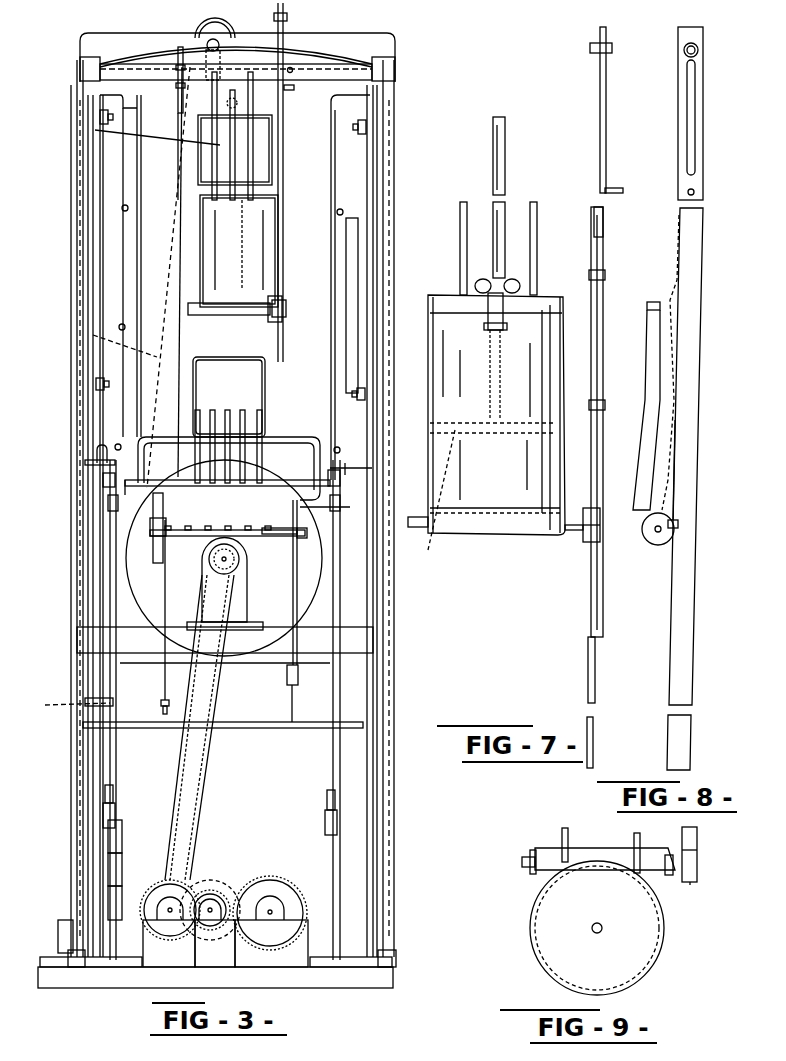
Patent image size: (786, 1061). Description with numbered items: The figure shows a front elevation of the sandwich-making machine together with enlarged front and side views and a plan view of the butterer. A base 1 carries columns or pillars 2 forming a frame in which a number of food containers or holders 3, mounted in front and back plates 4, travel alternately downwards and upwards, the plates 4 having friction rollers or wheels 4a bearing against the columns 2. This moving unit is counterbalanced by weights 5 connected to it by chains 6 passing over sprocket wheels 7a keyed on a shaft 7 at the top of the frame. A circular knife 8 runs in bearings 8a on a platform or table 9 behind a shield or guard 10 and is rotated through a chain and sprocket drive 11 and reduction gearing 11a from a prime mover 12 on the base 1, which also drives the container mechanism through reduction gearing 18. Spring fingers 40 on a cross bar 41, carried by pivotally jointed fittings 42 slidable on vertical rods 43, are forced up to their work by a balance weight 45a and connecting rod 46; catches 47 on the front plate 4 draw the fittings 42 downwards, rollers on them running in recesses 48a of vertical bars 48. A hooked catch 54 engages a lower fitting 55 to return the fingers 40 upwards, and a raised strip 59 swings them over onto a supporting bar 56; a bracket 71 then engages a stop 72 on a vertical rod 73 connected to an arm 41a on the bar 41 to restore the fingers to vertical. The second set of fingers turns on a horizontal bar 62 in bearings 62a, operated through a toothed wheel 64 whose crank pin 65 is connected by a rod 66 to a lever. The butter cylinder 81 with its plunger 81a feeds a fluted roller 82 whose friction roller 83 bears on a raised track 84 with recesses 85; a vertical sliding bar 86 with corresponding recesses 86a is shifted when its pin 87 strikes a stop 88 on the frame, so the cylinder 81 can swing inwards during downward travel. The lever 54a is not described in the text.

In FIG. 3, the base 1 is at (375, 980).
In FIG. 3, the columns or pillars 2 is at (80, 622).
In FIG. 3, the food containers or holders 3 is at (210, 145).
In FIG. 3, the front and back plates 4 is at (157, 236).
In FIG. 3, the friction rollers or wheels 4a is at (100, 115).
In FIG. 3, the weights 5 is at (118, 858).
In FIG. 3, the chains 6 is at (109, 335).
In FIG. 3, the shaft 7 is at (208, 48).
In FIG. 3, the sprocket wheels 7a is at (228, 30).
In FIG. 3, the circular knife 8 is at (300, 492).
In FIG. 3, the bearings 8a is at (298, 580).
In FIG. 3, the platform or table 9 is at (373, 634).
In FIG. 3, the shield or guard 10 is at (350, 507).
In FIG. 3, the chain and sprocket drive 11 is at (202, 813).
In FIG. 3, the reduction gearing 11a is at (293, 903).
In FIG. 3, the prime mover 12 is at (227, 892).
In FIG. 3, the reduction gearing 18 is at (150, 920).
In FIG. 3, the spring fingers 40 is at (262, 415).
In FIG. 3, the cross bar 41 is at (283, 482).
In FIG. 3, the arm 41a is at (97, 452).
In FIG. 3, the pivotally jointed fittings 42 is at (108, 500).
In FIG. 3, the vertical rods 43 is at (110, 530).
In FIG. 3, the balance weight 45a is at (293, 690).
In FIG. 3, the connecting rod 46 is at (298, 670).
In FIG. 3, the spring and cam actuated catches 47 is at (122, 208).
In FIG. 3, the vertical bars 48 is at (137, 185).
In FIG. 3, the recesses 48a is at (137, 170).
In FIG. 3, the hooked catch 54 is at (85, 466).
In FIG. 3, the lever arm 54a is at (65, 702).
In FIG. 3, the lower fitting 55 is at (107, 790).
In FIG. 3, the supporting bar 56 is at (322, 575).
In FIG. 3, the raised strip 59 is at (358, 240).
In FIG. 3, the horizontal bar 62 is at (307, 531).
In FIG. 3, the bearings 62a is at (300, 536).
In FIG. 3, the toothed wheel 64 is at (165, 500).
In FIG. 3, the crank pin 65 is at (165, 560).
In FIG. 3, the rod 66 is at (170, 600).
In FIG. 3, the bracket 71 is at (88, 60).
In FIG. 3, the stop 72 is at (175, 105).
In FIG. 3, the vertical rod 73 is at (180, 82).
In FIG. 3, the cylinder 81 is at (245, 215).
In FIG. 7, the cylinder 81 is at (533, 370).
In FIG. 9, the cylinder 81 is at (588, 953).
In FIG. 3, the plunger 81a is at (132, 132).
In FIG. 7, the plunger 81a is at (502, 158).
In FIG. 9, the plunger 81a is at (592, 928).
In FIG. 7, the fluted roller 82 is at (505, 530).
In FIG. 8, the fluted roller 82 is at (675, 537).
In FIG. 9, the fluted roller 82 is at (522, 862).
In FIG. 3, the friction roller 83 is at (282, 305).
In FIG. 7, the friction roller 83 is at (582, 543).
In FIG. 8, the friction roller 83 is at (648, 537).
In FIG. 9, the friction roller 83 is at (687, 882).
In FIG. 7, the raised track 84 is at (596, 345).
In FIG. 8, the raised track 84 is at (670, 487).
In FIG. 9, the raised track 84 is at (687, 840).
In FIG. 7, the recesses 85 is at (594, 237).
In FIG. 8, the recesses 85 is at (680, 387).
In FIG. 7, the vertical sliding bar 86 is at (602, 130).
In FIG. 8, the vertical sliding bar 86 is at (694, 233).
In FIG. 9, the vertical sliding bar 86 is at (690, 883).
In FIG. 8, the recesses 86a is at (678, 277).
In FIG. 3, the pin 87 is at (292, 85).
In FIG. 8, the pin 87 is at (688, 193).
In FIG. 3, the stop 88 is at (291, 68).